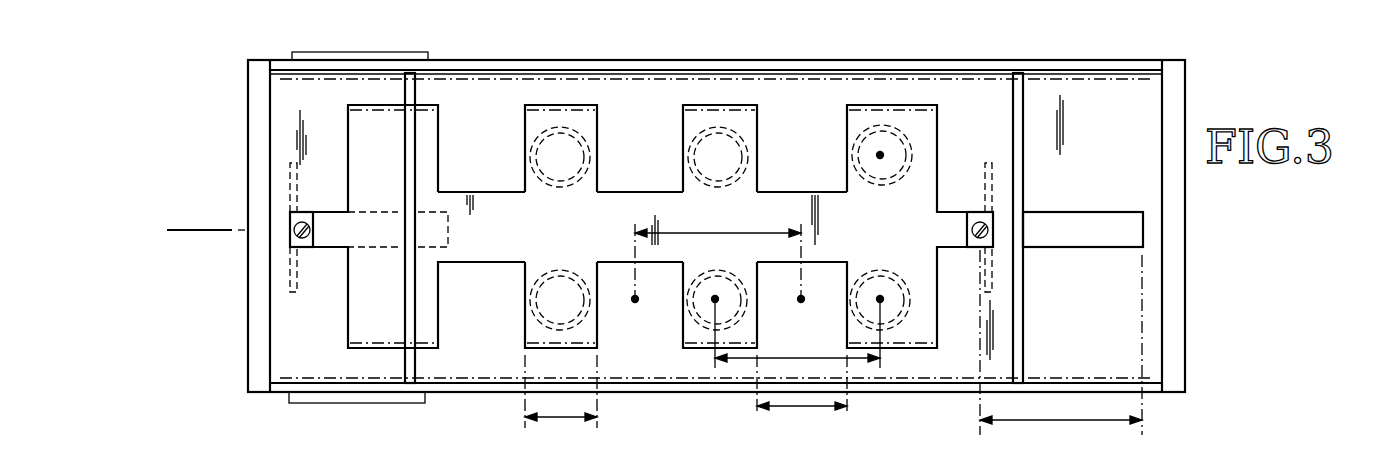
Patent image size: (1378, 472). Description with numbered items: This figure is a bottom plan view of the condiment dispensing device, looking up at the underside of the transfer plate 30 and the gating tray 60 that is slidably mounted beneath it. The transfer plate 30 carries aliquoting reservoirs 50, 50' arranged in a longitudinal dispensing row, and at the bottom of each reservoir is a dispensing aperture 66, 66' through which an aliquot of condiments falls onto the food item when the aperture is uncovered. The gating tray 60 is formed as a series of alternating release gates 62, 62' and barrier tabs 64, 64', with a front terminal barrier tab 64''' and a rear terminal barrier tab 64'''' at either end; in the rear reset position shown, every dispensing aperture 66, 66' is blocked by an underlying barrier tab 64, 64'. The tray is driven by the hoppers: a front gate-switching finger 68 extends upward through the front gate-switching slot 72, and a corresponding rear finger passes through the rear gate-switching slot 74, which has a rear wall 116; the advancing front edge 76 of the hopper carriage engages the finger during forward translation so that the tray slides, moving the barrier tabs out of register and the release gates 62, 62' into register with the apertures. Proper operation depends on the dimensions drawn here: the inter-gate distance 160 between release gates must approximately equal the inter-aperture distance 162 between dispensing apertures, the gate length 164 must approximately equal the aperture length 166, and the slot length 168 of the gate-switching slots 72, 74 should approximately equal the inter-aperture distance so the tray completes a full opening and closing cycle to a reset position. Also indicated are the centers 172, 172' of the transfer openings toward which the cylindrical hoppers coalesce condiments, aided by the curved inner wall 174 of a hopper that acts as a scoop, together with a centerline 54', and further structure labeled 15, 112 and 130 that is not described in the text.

The base plate 15 is at (716, 425).
The transfer plate 30 is at (822, 98).
The aliquoting reservoir 50 is at (560, 275).
The aliquoting reservoir 50' is at (530, 157).
The centerline axis 54' is at (205, 255).
The gating tray 60 is at (600, 208).
The release gate 62 is at (481, 112).
The release gate 62' is at (644, 112).
The barrier tab 64 is at (576, 112).
The barrier tab 64' is at (730, 112).
The front terminal barrier tab 64''' is at (369, 146).
The rear terminal barrier tab 64'''' is at (918, 122).
The dispensing aperture 66 is at (533, 305).
The dispensing aperture 66' is at (693, 305).
The front gate-switching finger 68 is at (985, 172).
The front gate-switching slot 72 is at (1100, 221).
The rear gate-switching slot 74 is at (385, 232).
The front edge of hopper carriage 76 is at (292, 188).
The partition 112 is at (386, 272).
The rear wall 116 is at (293, 245).
The housing frame 130 is at (1185, 336).
The inter-gate distance 160 is at (737, 233).
The inter-aperture distance 162 is at (798, 358).
The gate length 164 is at (814, 410).
The aperture length 166 is at (561, 420).
The slot length 168 is at (1067, 420).
The center of transfer opening 172 is at (891, 168).
The center of transfer opening 172' is at (880, 279).
The curved inner wall of hopper 174 is at (357, 432).